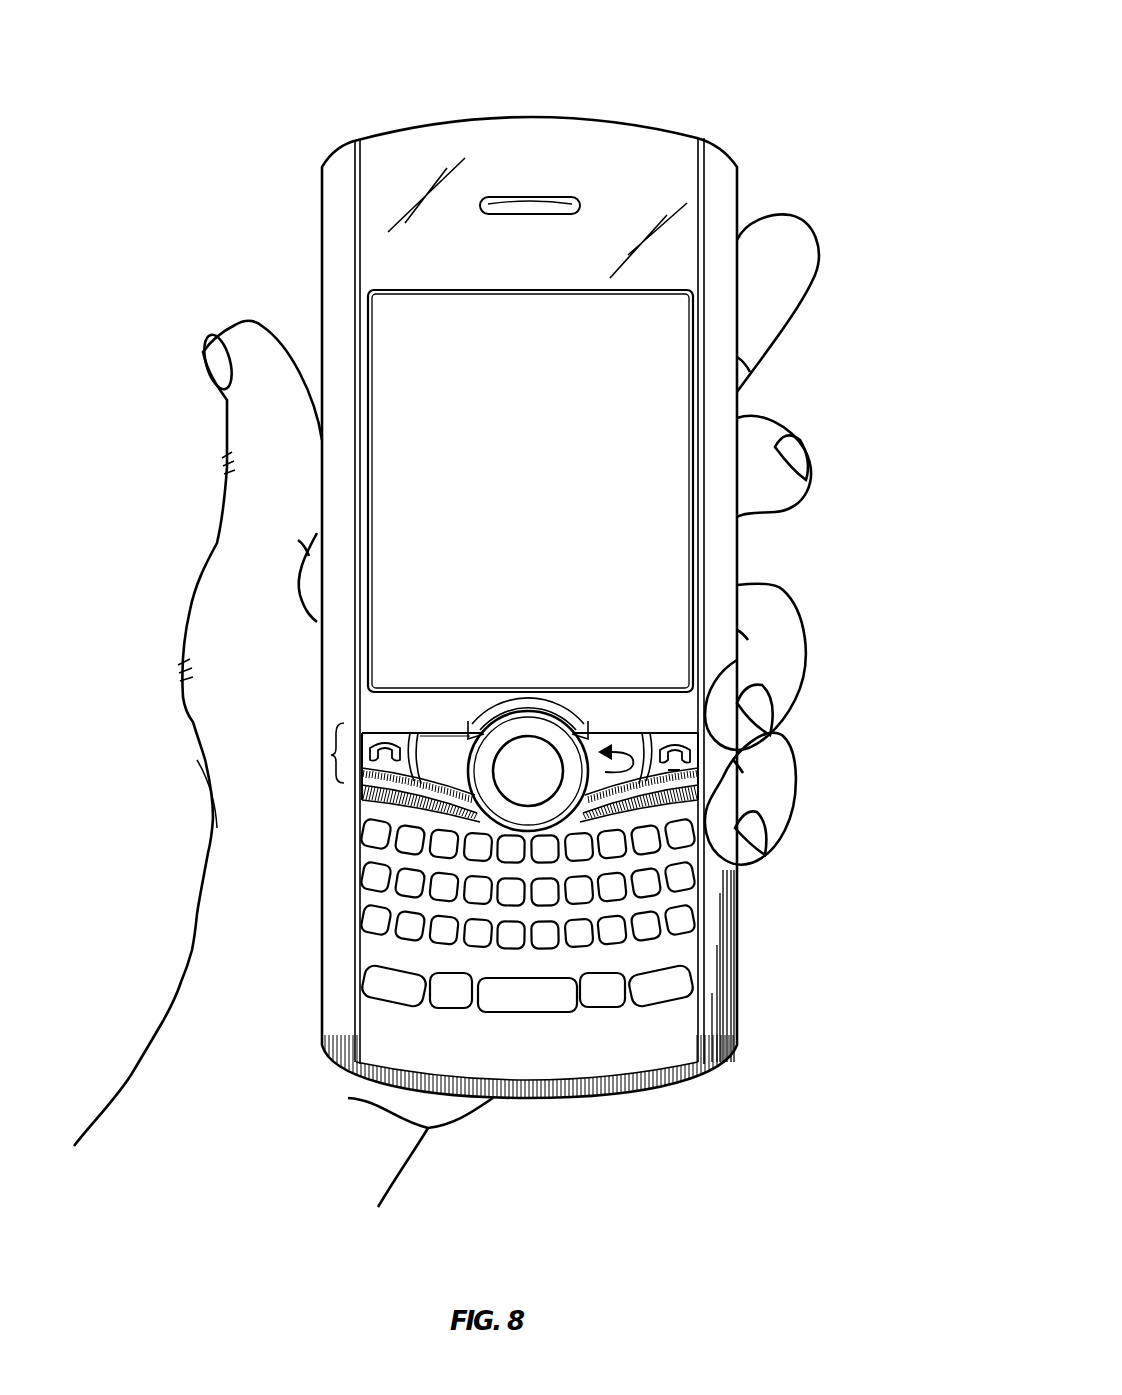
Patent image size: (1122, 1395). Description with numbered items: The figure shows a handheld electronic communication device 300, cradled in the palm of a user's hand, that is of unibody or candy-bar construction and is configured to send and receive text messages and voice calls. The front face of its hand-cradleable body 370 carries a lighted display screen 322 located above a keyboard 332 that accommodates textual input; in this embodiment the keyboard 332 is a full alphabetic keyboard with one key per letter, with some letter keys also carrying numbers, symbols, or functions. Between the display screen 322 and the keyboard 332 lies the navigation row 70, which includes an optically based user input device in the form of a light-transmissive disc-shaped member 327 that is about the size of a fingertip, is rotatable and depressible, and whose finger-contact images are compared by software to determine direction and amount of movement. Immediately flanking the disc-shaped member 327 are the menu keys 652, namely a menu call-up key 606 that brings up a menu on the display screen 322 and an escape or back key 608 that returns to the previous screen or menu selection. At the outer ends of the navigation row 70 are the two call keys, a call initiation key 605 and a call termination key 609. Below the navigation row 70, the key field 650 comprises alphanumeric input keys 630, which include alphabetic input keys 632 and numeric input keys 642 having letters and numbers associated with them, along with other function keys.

The handheld electronic communication device 300 is at (683, 50).
The body 370 is at (720, 207).
The display screen 322 is at (397, 333).
The menu keys 652 is at (603, 732).
The menu call-up key 606 is at (440, 752).
The escape or back key 608 is at (613, 747).
The navigation row 70 is at (333, 755).
The call initiation key 605 is at (385, 752).
The call termination key 609 is at (687, 757).
The light-transmissive disc-shaped member 327 is at (570, 793).
The alphanumeric input keys 630 is at (627, 947).
The alphabetic input keys 632 is at (356, 877).
The key field 650 is at (373, 1013).
The numeric input keys 642 is at (448, 1008).
The keyboard 332 is at (530, 1053).